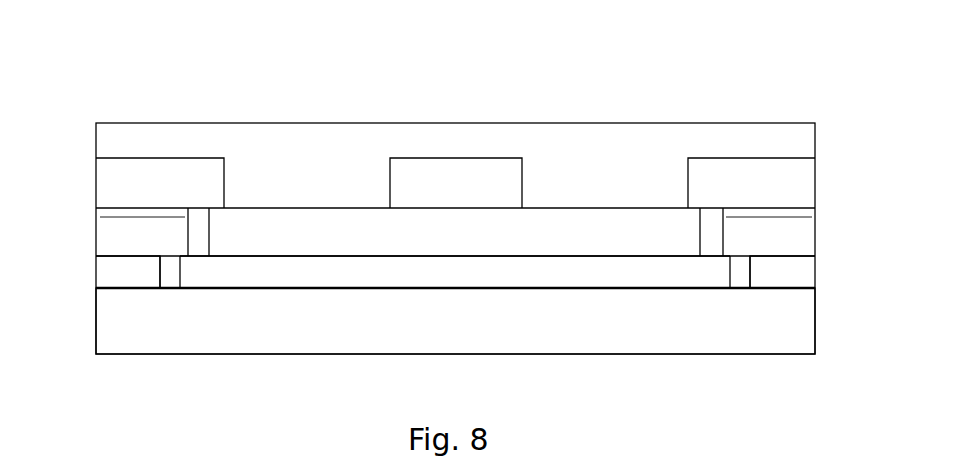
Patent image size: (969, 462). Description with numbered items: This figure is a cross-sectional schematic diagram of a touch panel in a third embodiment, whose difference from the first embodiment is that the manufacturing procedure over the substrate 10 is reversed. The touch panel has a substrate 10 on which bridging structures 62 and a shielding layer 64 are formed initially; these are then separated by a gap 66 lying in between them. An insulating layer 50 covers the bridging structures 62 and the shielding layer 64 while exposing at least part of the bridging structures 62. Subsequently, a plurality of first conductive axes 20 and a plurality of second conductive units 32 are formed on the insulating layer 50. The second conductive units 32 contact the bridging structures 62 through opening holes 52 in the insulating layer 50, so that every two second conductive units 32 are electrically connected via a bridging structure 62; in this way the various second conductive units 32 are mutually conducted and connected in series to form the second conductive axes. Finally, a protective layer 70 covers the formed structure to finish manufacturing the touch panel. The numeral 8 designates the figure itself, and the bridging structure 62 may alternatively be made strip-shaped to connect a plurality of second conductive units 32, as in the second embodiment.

The semiconductor device 8 is at (793, 80).
The substrate 10 is at (465, 331).
The first conductive axes 20 is at (465, 190).
The second conductive units 32 is at (165, 189).
The insulating layer 50 is at (148, 242).
The opening holes 52 is at (178, 217).
The bridging structures 62 is at (465, 281).
The shielding layer 64 is at (137, 281).
The gap 66 is at (170, 284).
The protective layer 70 is at (467, 149).